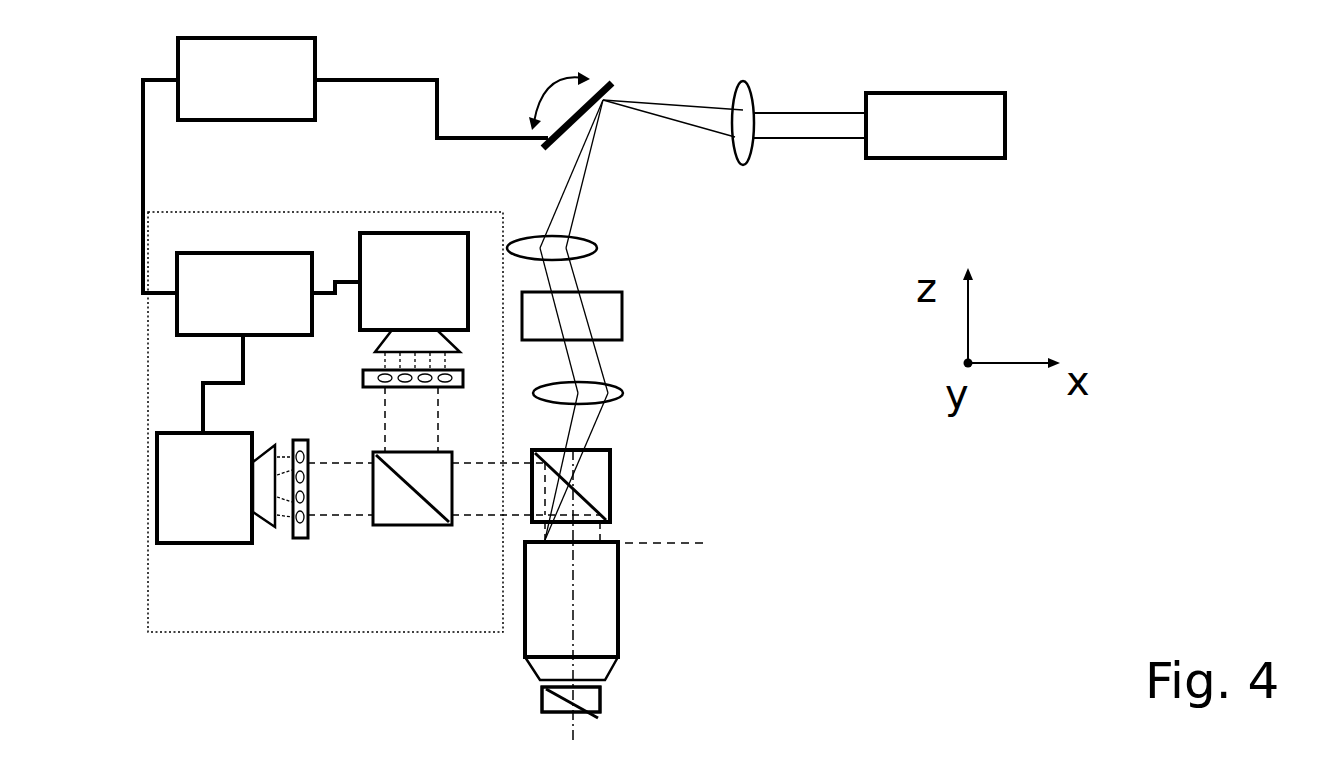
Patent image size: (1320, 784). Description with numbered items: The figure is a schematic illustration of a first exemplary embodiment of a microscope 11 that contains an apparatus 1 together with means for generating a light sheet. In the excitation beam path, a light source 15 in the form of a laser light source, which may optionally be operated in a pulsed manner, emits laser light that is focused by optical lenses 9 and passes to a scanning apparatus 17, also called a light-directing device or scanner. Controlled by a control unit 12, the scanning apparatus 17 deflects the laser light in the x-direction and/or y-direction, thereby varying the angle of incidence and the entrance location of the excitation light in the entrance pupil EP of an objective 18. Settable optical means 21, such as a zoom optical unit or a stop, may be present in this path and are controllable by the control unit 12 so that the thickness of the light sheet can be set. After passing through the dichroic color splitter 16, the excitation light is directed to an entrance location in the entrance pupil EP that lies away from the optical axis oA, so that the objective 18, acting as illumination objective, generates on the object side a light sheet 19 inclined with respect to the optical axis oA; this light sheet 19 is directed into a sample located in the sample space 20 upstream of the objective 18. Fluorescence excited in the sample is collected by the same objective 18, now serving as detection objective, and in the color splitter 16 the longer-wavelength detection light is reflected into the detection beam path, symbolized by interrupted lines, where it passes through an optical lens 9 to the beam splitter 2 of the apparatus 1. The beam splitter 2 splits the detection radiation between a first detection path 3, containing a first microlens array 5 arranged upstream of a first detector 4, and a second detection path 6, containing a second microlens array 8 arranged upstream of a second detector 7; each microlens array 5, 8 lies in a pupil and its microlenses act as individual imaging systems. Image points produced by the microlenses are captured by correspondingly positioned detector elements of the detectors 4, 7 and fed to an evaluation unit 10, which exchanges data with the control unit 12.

The apparatus 1 is at (143, 416).
The beam splitter 2 is at (408, 527).
The first detection path 3 is at (363, 516).
The first detector 4 is at (218, 509).
The first microlens array 5 is at (297, 540).
The second detection path 6 is at (385, 435).
The second detector 7 is at (428, 304).
The second microlens array 8 is at (463, 387).
The optical lens 9 is at (738, 162).
The evaluation unit 10 is at (270, 314).
The microscope 11 is at (466, 66).
The control unit 12 is at (272, 100).
The light source 15 is at (960, 146).
The color splitter 16 is at (610, 480).
The scanning apparatus 17 is at (612, 88).
The objective 18 is at (618, 590).
The light sheet 19 is at (598, 720).
The sample space 20 is at (540, 705).
The settable optical means 21 is at (622, 302).
The entrance pupil EP is at (680, 546).
The optical axis oA is at (575, 625).